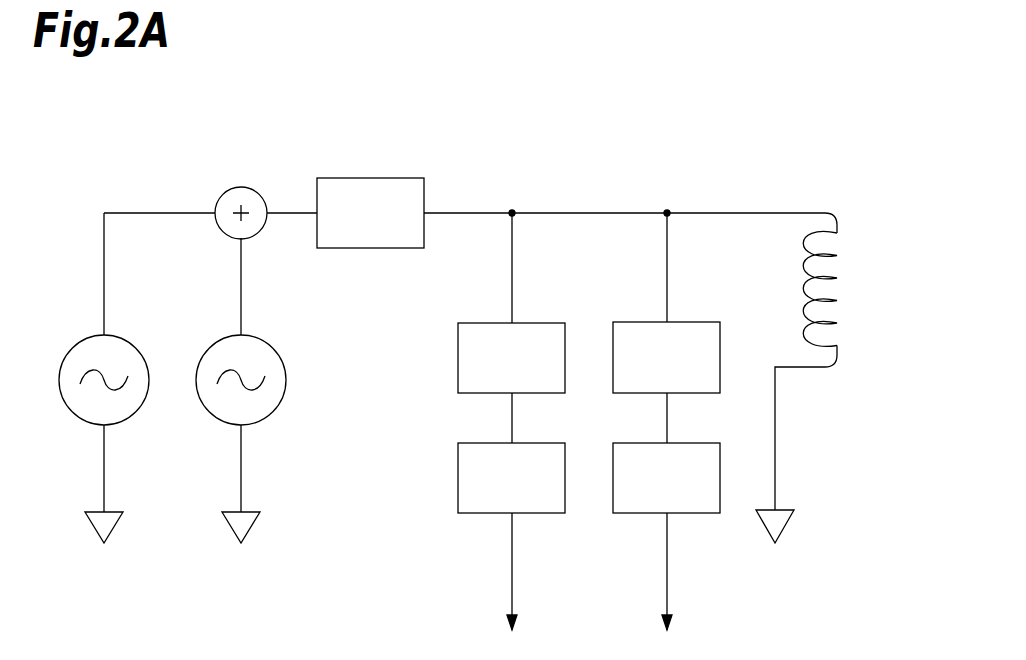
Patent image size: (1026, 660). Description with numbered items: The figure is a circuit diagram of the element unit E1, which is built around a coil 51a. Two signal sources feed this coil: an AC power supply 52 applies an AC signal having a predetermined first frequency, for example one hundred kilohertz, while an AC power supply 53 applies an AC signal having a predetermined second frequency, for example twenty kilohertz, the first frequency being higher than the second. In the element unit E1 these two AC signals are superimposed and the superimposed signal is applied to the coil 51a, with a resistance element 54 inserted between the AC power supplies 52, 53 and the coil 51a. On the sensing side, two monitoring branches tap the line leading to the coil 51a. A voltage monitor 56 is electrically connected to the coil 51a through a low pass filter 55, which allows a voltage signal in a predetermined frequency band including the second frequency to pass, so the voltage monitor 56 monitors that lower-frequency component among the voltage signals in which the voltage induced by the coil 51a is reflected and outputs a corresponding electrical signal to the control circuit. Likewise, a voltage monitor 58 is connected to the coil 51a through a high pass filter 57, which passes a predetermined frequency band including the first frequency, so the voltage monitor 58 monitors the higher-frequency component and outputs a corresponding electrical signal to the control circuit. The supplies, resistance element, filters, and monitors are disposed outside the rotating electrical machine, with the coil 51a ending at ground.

The coil 51a is at (839, 216).
The AC power supply 52 is at (85, 335).
The AC power supply 53 is at (268, 338).
The resistance element 54 is at (373, 178).
The low pass filter 55 is at (458, 366).
The voltage monitor 56 is at (458, 482).
The high pass filter 57 is at (682, 322).
The voltage monitor 58 is at (640, 513).
The element unit E1 is at (645, 178).